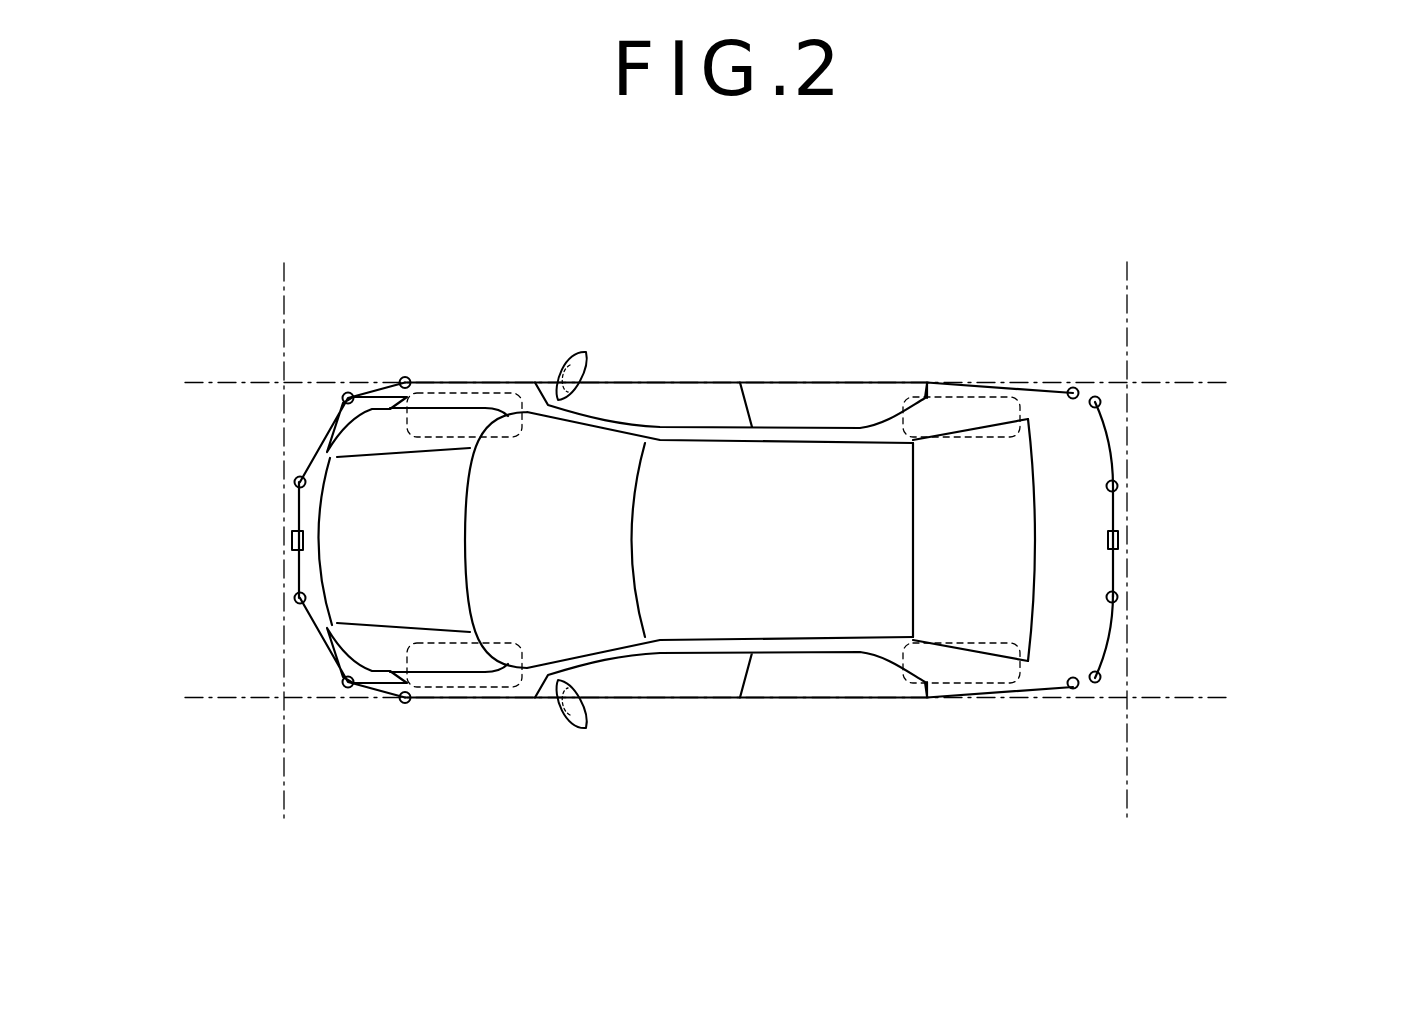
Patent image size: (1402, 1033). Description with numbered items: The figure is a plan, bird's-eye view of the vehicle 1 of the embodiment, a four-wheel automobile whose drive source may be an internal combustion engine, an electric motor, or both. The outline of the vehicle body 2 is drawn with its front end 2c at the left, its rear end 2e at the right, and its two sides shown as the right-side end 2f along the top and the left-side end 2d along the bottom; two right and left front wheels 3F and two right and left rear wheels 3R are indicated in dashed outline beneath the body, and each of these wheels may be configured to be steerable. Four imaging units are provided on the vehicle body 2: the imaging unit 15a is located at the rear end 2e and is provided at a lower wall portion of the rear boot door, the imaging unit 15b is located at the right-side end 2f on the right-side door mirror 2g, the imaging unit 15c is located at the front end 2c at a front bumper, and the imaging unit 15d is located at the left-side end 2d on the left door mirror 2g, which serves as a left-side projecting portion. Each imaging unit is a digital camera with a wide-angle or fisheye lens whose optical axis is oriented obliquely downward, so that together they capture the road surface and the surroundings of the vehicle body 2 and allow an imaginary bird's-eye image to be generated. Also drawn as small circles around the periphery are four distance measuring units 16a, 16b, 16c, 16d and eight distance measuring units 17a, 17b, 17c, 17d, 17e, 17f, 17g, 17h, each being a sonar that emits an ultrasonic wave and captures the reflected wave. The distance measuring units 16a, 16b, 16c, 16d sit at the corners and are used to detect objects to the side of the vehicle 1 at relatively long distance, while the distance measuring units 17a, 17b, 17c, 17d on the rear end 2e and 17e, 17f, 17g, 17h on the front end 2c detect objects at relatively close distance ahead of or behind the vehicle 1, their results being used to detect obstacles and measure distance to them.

The vehicle 1 is at (851, 274).
The vehicle body 2 is at (1050, 377).
The front end 2c is at (297, 556).
The left-side end 2d is at (832, 699).
The rear end 2e is at (1118, 565).
The right-side end 2f is at (843, 382).
The door mirror 2g is at (589, 357).
The front wheels 3F is at (459, 393).
The rear wheels 3R is at (958, 397).
The imaging unit 15a is at (1119, 540).
The imaging unit 15b is at (566, 352).
The imaging unit 15c is at (292, 540).
The imaging unit 15d is at (553, 727).
The distance measuring unit 16a is at (1073, 689).
The distance measuring unit 16b is at (1073, 388).
The distance measuring unit 16c is at (403, 377).
The distance measuring unit 16d is at (403, 703).
The distance measuring unit 17a is at (1101, 677).
The distance measuring unit 17b is at (1118, 597).
The distance measuring unit 17c is at (1118, 486).
The distance measuring unit 17d is at (1100, 398).
The distance measuring unit 17e is at (341, 400).
The distance measuring unit 17f is at (294, 482).
The distance measuring unit 17g is at (295, 600).
The distance measuring unit 17h is at (342, 681).